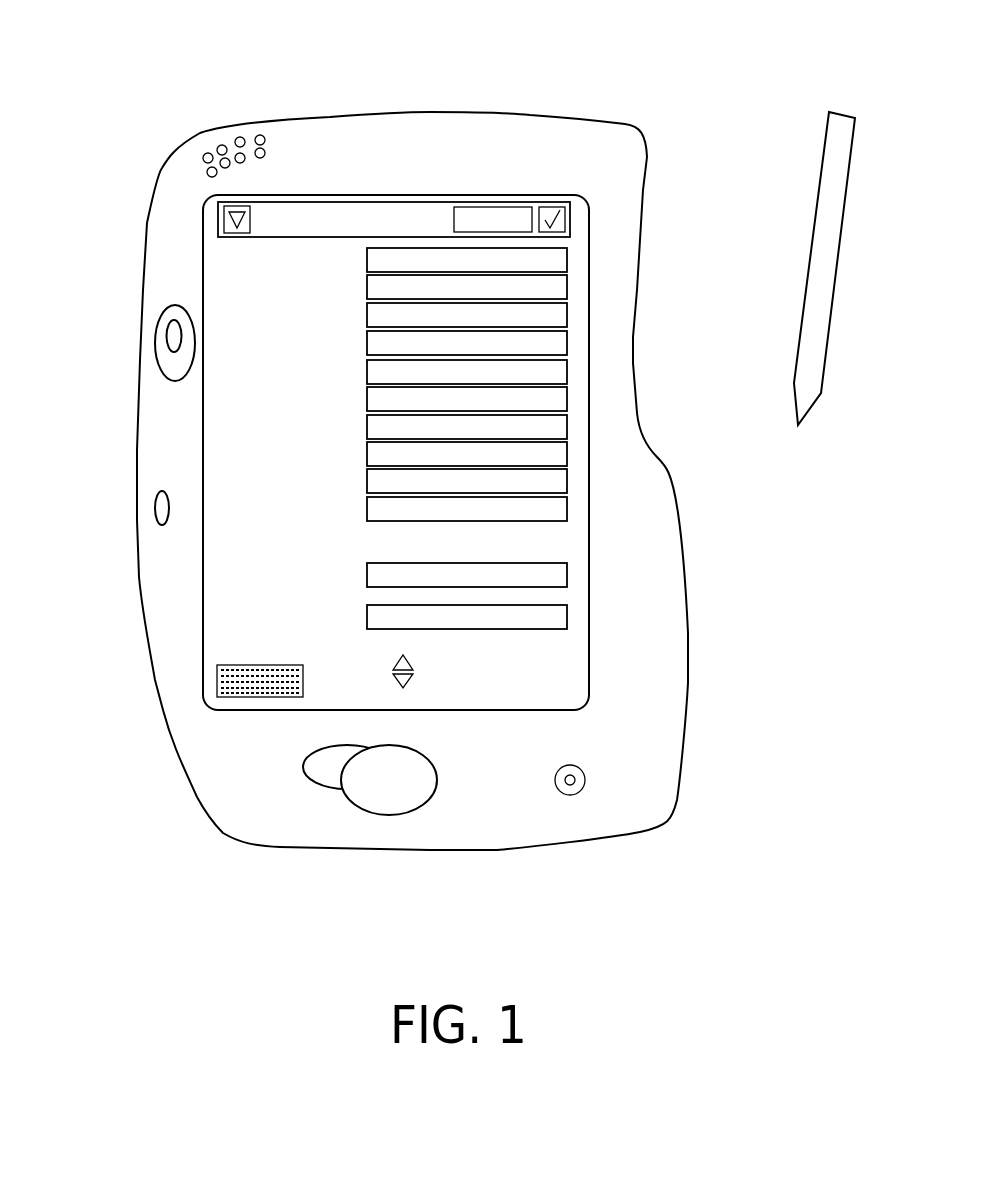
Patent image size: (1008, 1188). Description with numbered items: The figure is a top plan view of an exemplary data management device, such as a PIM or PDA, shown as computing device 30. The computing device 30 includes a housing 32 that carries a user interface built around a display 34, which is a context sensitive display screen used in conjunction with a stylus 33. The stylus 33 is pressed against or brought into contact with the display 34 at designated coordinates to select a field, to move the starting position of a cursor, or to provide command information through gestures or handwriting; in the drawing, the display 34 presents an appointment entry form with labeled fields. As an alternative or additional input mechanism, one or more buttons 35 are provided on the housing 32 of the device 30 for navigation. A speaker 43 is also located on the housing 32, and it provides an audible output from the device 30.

The computing device 30 is at (135, 63).
The housing 32 is at (438, 113).
The stylus 33 is at (833, 293).
The display 34 is at (532, 508).
The buttons 35 is at (173, 335).
The speaker 43 is at (243, 133).